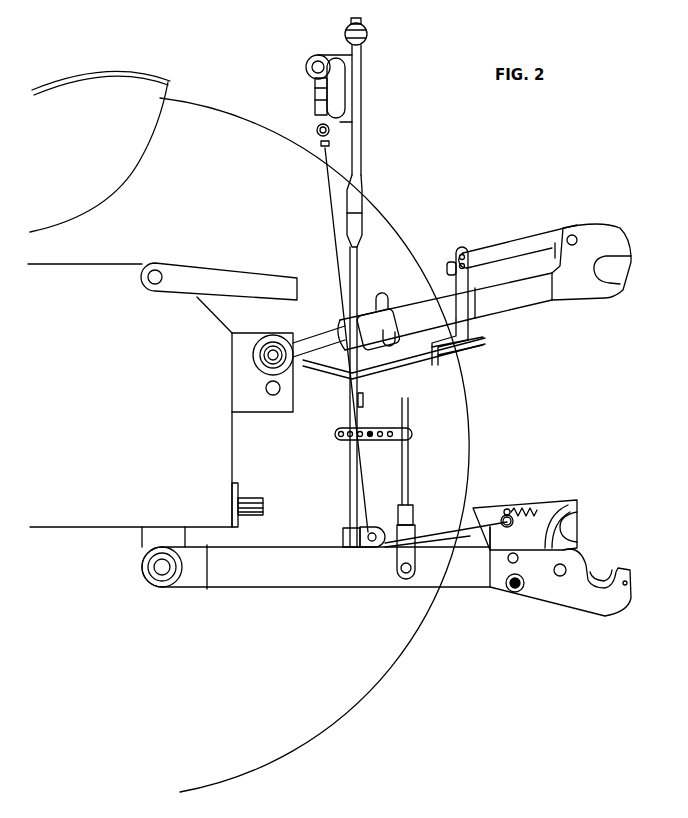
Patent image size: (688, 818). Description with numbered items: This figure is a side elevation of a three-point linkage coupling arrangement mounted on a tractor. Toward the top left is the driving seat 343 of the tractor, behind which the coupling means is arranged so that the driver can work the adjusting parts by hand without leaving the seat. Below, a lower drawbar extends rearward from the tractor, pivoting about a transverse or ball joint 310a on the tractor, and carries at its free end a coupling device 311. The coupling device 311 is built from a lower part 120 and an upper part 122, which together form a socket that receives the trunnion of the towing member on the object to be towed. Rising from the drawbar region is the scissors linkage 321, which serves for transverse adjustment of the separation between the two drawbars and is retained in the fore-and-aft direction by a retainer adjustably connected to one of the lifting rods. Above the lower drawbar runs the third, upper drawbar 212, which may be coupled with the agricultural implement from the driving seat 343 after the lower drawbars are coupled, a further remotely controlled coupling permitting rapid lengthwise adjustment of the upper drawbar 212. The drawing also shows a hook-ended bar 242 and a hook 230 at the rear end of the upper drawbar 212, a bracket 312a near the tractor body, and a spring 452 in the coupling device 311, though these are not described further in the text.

The driving seat 343 is at (138, 148).
The scissors linkage 321 is at (358, 272).
The locking bar 242 is at (505, 247).
The upper hook 230 is at (587, 243).
The upper drawbar 212 is at (518, 307).
The bearing bracket 312a is at (273, 403).
The spring 452 is at (496, 508).
The upper part of the coupling device 122 is at (561, 512).
The transverse or ball joints 310a is at (155, 585).
The coupling device 311 is at (463, 590).
The lower part of the coupling device 120 is at (598, 603).